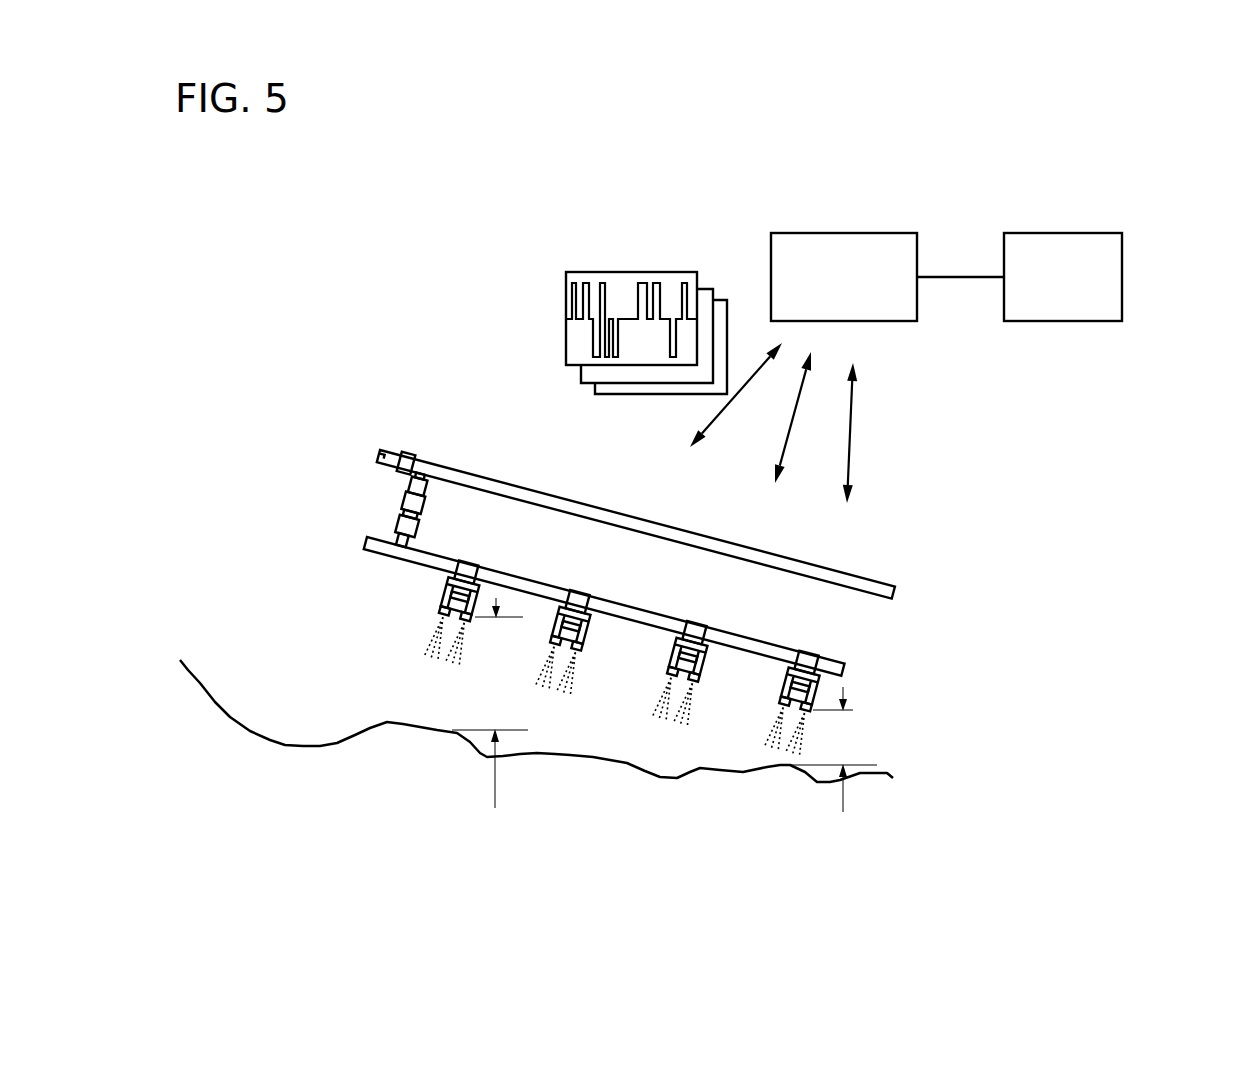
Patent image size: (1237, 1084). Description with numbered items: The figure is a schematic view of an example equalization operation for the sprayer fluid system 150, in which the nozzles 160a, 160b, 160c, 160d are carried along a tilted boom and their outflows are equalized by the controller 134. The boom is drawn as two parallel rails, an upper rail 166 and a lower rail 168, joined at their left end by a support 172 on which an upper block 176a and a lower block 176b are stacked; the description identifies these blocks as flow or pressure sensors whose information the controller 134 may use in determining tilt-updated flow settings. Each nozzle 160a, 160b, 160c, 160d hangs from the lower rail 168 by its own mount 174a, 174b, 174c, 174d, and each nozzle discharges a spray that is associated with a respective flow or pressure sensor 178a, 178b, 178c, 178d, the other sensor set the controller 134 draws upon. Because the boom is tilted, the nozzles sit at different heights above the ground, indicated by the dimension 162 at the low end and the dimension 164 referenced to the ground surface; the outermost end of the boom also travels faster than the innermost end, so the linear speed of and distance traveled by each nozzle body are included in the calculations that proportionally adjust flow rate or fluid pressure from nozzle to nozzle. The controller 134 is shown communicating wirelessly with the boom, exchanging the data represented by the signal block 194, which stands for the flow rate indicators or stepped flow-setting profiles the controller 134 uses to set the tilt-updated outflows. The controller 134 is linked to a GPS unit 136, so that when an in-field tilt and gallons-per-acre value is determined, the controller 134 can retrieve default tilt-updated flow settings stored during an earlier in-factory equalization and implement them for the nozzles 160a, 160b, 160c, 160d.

The controller 134 is at (828, 232).
The GPS receiver 136 is at (1091, 321).
The control signal / spray pattern data 194 is at (626, 271).
The spray boom system 150 is at (1010, 547).
The upper boom rail 166 is at (828, 569).
The lower boom rail 168 is at (367, 547).
The telescoping support column 172 is at (402, 530).
The flow or pressure sensor 176a is at (407, 450).
The flow or pressure sensor 176b is at (405, 493).
The nozzle mount a 174a is at (465, 573).
The nozzle mount b 174b is at (582, 588).
The nozzle mount c 174c is at (700, 625).
The nozzle mount d 174d is at (798, 652).
The nozzle 160a is at (437, 582).
The nozzle 160b is at (560, 598).
The nozzle 160c is at (672, 626).
The nozzle 160d is at (815, 660).
The flow or pressure sensor 178a is at (437, 605).
The flow or pressure sensor 178b is at (587, 636).
The flow or pressure sensor 178c is at (706, 667).
The flow or pressure sensor 178d is at (780, 681).
The nozzle height above ground 162 is at (833, 814).
The ground height reference 164 is at (490, 790).